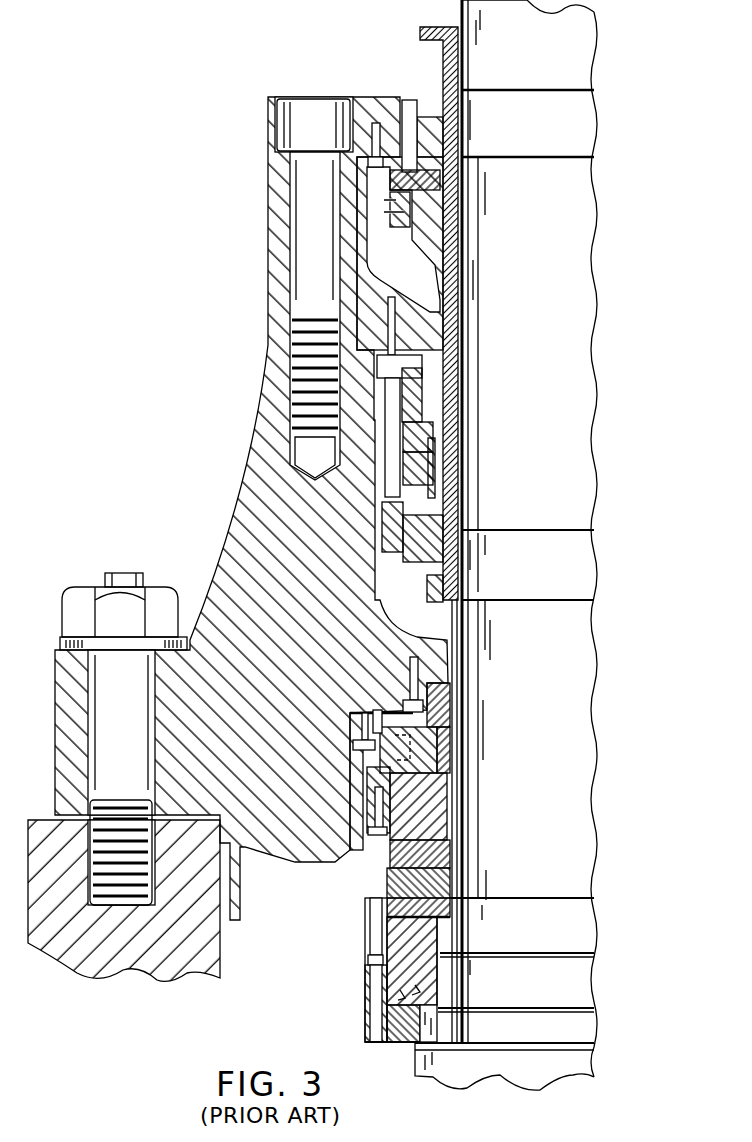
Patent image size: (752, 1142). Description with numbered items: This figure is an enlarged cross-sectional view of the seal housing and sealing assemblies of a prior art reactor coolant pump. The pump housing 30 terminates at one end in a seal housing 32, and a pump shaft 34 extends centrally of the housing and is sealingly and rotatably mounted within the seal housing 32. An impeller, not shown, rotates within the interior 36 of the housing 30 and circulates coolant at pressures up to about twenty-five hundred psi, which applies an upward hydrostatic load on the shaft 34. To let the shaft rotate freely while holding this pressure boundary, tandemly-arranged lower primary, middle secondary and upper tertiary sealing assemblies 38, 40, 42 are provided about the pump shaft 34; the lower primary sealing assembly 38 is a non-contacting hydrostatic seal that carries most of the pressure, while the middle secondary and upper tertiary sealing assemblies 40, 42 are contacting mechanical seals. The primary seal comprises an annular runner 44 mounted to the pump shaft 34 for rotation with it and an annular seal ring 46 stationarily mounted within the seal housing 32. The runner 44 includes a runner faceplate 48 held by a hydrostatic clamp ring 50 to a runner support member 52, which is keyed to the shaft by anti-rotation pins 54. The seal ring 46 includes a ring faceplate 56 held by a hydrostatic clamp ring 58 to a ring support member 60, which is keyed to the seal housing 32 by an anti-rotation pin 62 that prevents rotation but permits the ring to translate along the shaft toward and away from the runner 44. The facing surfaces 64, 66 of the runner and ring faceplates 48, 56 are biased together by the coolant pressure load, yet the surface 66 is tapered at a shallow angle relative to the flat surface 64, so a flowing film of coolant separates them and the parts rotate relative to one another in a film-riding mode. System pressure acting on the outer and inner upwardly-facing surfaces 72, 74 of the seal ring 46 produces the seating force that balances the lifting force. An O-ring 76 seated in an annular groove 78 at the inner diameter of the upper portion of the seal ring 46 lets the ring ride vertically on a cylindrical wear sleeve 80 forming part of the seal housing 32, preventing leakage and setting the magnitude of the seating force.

The pump housing 30 is at (95, 972).
The seal housing 32 is at (240, 530).
The pump shaft 34 is at (558, 56).
The interior of the housing 36 is at (275, 962).
The lower primary sealing assembly 38 is at (472, 820).
The middle secondary sealing assembly 40 is at (477, 501).
The upper tertiary sealing assembly 42 is at (497, 182).
The runner 44 is at (460, 939).
The seal ring 46 is at (488, 820).
The runner faceplate 48 is at (455, 887).
The hydrostatic clamp ring 50 is at (390, 890).
The runner support member 52 is at (377, 983).
The anti-rotation pins 54 is at (455, 988).
The ring faceplate 56 is at (452, 845).
The hydrostatic clamp ring 58 is at (370, 817).
The ring support member 60 is at (458, 808).
The anti-rotation pin 62 is at (450, 727).
The facing surface of the runner faceplate 64 is at (397, 857).
The facing surface of the ring faceplate 66 is at (458, 877).
The outer peripheral upwardly-facing surface 72 is at (458, 690).
The inner peripheral upwardly-facing surface 74 is at (452, 783).
The O-ring 76 is at (455, 722).
The annular groove 78 is at (492, 726).
The cylindrical wear sleeve 80 is at (458, 747).